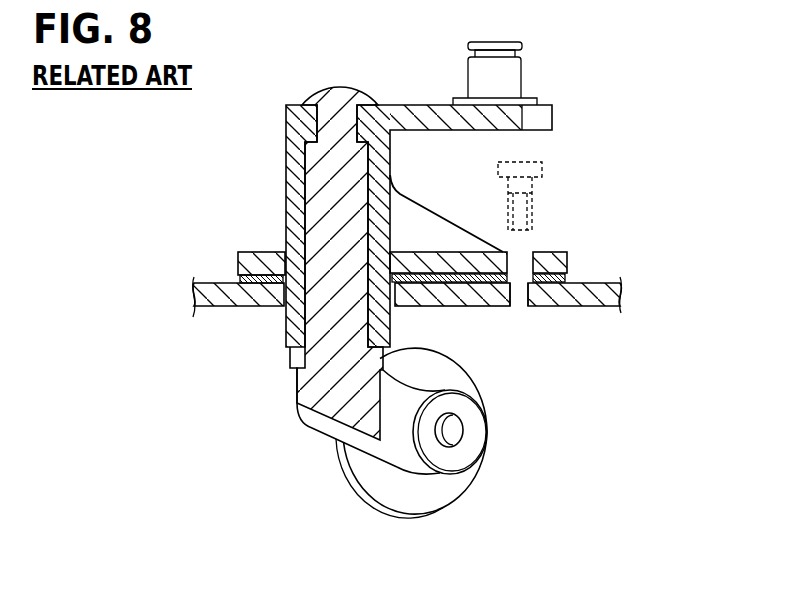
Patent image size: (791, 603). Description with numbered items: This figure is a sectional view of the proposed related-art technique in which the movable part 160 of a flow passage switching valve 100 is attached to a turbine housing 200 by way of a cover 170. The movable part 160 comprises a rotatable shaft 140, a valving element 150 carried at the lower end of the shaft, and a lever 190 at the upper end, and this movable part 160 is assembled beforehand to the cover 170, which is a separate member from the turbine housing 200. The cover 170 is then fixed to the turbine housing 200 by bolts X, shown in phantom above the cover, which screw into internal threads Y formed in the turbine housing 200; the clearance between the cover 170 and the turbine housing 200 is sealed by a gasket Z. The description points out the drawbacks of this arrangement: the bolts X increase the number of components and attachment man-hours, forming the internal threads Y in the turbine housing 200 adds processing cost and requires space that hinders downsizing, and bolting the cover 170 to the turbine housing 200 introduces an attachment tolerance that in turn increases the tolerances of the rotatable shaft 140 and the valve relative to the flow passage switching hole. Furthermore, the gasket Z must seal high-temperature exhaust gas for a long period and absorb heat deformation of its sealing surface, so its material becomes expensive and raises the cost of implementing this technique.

The flow passage switching valve 100 is at (407, 453).
The rotatable shaft 140 is at (338, 280).
The valving element 150 is at (377, 485).
The movable part 160 is at (297, 454).
The cover 170 is at (442, 265).
The lever 190 is at (437, 113).
The turbine housing 200 is at (595, 297).
The bolt X is at (542, 165).
The internal thread Y is at (525, 298).
The gasket Z is at (240, 278).